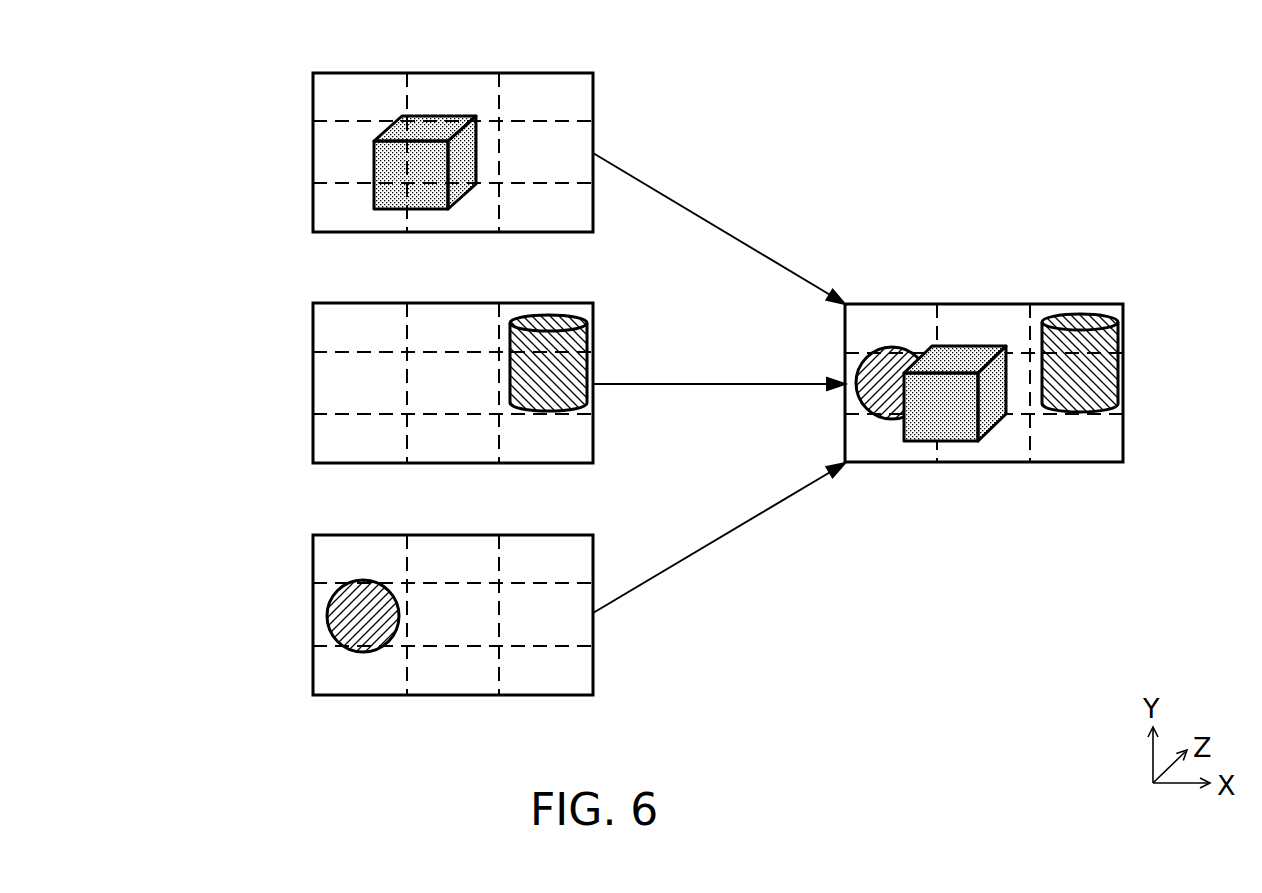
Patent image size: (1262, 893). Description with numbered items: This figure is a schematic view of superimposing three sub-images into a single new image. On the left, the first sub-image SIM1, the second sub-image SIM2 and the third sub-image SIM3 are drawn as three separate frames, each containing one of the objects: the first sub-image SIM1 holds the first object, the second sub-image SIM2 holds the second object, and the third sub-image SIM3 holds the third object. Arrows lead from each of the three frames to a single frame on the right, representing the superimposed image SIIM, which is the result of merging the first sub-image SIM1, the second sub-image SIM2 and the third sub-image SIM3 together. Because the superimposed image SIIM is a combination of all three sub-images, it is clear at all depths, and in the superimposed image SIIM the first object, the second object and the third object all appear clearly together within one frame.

The first sub-image SIM1 is at (380, 152).
The second sub-image SIM2 is at (380, 383).
The third sub-image SIM3 is at (380, 615).
The superimposed image SIIM is at (984, 404).